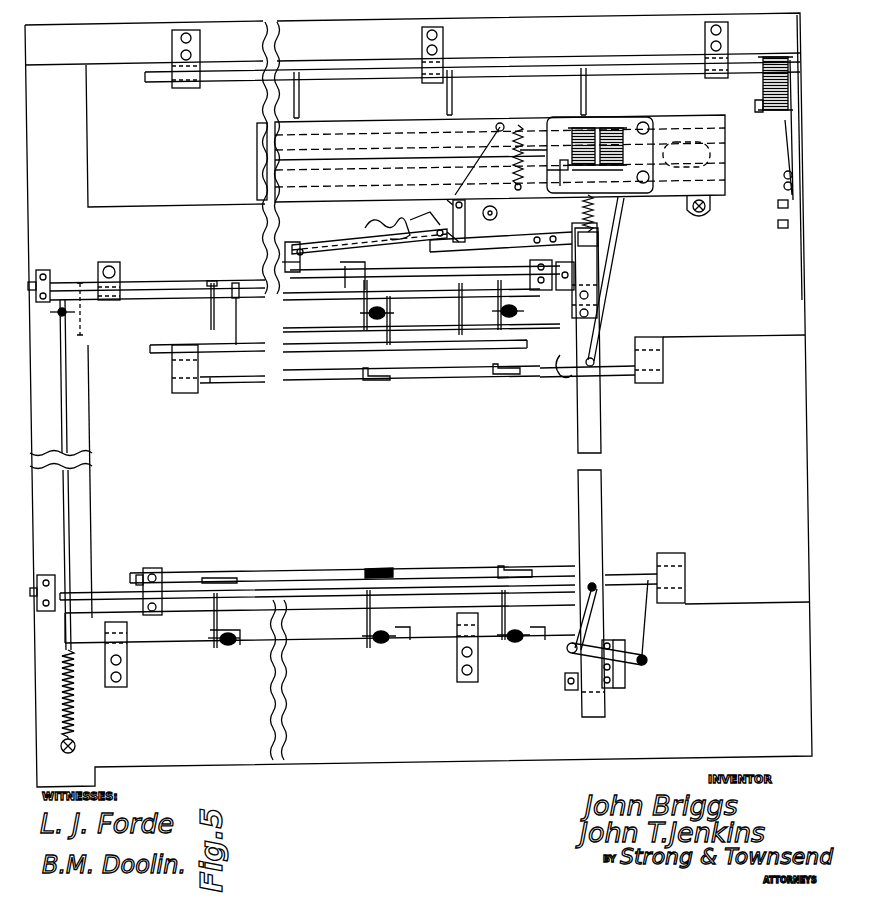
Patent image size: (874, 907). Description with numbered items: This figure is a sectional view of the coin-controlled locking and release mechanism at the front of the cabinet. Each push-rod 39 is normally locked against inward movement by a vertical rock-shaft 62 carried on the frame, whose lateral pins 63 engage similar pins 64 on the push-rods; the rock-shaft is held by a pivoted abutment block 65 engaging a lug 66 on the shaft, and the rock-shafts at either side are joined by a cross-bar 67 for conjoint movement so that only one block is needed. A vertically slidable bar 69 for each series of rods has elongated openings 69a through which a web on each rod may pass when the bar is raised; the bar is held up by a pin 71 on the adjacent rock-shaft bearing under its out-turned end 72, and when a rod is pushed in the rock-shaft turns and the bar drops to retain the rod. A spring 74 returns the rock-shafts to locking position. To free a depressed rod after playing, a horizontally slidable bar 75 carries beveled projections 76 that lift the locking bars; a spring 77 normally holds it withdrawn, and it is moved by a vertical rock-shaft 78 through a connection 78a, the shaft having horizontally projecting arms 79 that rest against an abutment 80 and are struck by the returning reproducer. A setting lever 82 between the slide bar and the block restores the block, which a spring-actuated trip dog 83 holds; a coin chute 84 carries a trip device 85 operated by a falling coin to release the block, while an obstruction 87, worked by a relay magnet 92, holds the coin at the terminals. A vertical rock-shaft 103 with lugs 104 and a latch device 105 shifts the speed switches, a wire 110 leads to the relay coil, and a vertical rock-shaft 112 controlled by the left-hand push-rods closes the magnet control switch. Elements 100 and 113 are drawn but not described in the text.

The push-rod 39 is at (392, 302).
The vertical rock-shaft 62 is at (236, 283).
The lateral pin 63 is at (212, 282).
The pin 64 is at (365, 312).
The pivoted abutment block 65 is at (332, 246).
The lug 66 is at (290, 243).
The cross-bar 67 is at (60, 382).
The vertically slidable bar 69 is at (165, 298).
The elongated opening 69a is at (400, 640).
The pin 71 is at (80, 336).
The out-turned end 72 is at (52, 285).
The spring 74 is at (70, 700).
The horizontally arranged slidable bar 75 is at (578, 510).
The beveled projection 76 is at (606, 320).
The spring 77 is at (580, 210).
The vertical rock-shaft 78 is at (617, 377).
The connection 78a is at (560, 372).
The horizontally projecting arm 79 is at (385, 380).
The abutment 80 is at (512, 374).
The setting lever 82 is at (537, 238).
The spring-actuated trip dog 83 is at (465, 220).
The coin chute 84 is at (368, 144).
The trip device 85 is at (366, 228).
The obstruction 87 is at (521, 124).
The relay magnet 92 is at (608, 125).
The magnet 100 is at (762, 80).
The vertical rock-shaft 103 is at (498, 62).
The lug or pin 104 is at (580, 100).
The latch device 105 is at (348, 252).
The wire 110 is at (498, 216).
The vertical rock-shaft 112 is at (326, 354).
The link 113 is at (612, 240).